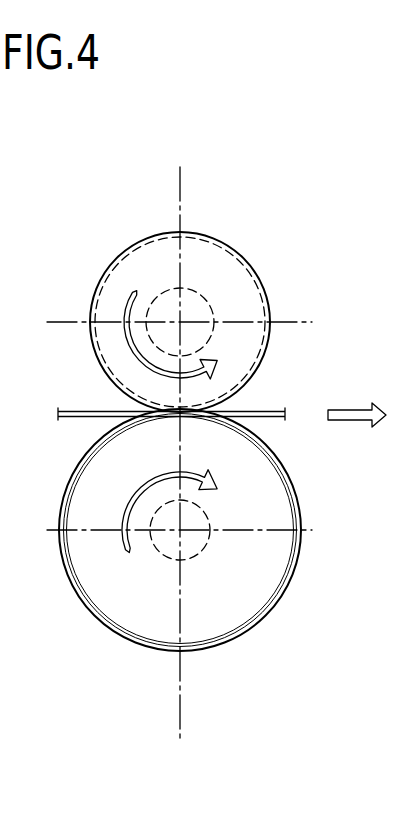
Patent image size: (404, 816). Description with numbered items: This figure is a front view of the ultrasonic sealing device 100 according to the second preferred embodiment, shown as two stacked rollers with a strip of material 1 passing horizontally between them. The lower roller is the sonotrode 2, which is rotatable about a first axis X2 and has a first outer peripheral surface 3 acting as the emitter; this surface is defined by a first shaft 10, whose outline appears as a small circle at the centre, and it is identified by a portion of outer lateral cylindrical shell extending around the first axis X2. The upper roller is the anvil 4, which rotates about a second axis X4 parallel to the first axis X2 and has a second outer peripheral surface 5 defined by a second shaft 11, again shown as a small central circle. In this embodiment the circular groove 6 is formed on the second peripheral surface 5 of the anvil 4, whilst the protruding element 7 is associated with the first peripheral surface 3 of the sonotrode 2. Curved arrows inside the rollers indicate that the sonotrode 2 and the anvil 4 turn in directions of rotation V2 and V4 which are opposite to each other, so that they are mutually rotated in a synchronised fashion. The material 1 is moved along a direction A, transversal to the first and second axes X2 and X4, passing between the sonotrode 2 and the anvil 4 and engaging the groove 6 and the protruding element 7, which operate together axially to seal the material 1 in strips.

The ultrasonic sealing device 100 is at (200, 169).
The material 1 is at (275, 411).
The sonotrode 2 is at (230, 588).
The first outer peripheral surface 3 is at (290, 483).
The anvil 4 is at (147, 267).
The second outer peripheral surface 5 is at (258, 280).
The circular groove 6 is at (167, 235).
The protruding element 7 is at (233, 641).
The first shaft 10 is at (210, 538).
The second shaft 11 is at (160, 297).
The second axis X4 is at (180, 322).
The first axis X2 is at (180, 530).
The direction of rotation of the anvil V4 is at (130, 322).
The direction of rotation of the sonotrode V2 is at (135, 505).
The direction A is at (357, 403).